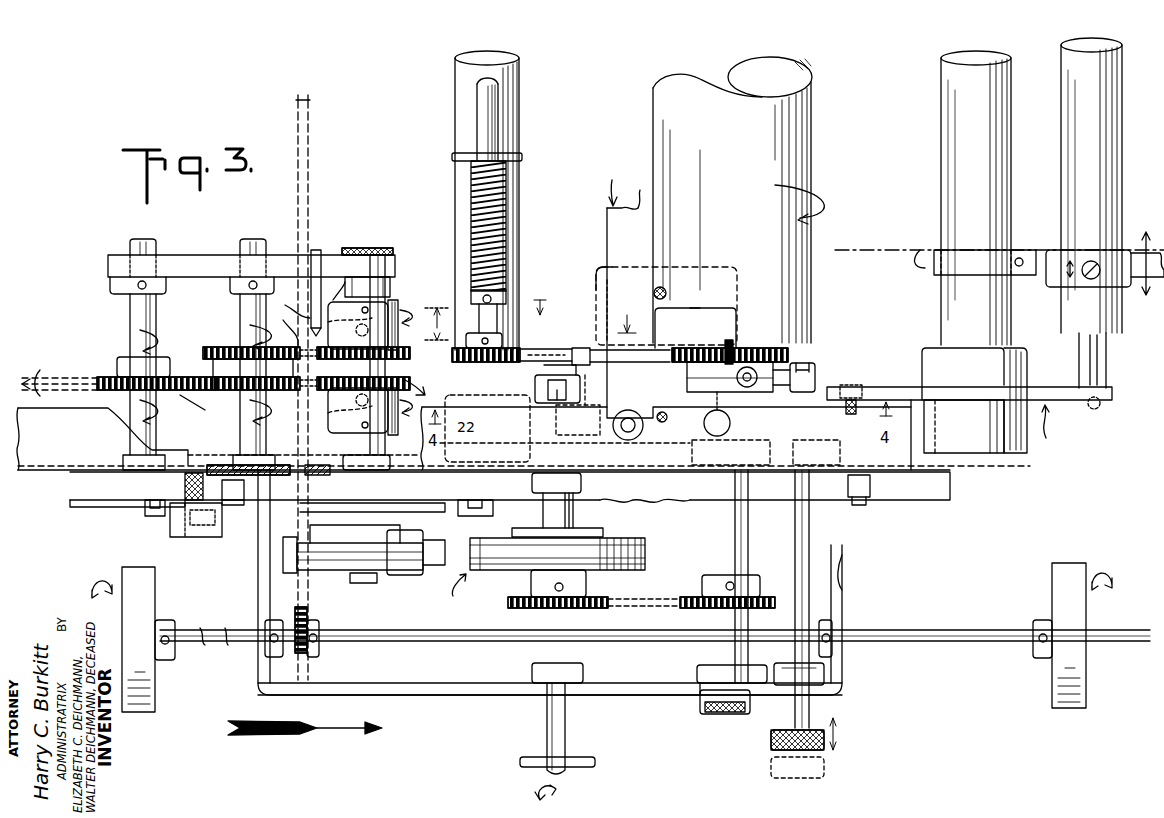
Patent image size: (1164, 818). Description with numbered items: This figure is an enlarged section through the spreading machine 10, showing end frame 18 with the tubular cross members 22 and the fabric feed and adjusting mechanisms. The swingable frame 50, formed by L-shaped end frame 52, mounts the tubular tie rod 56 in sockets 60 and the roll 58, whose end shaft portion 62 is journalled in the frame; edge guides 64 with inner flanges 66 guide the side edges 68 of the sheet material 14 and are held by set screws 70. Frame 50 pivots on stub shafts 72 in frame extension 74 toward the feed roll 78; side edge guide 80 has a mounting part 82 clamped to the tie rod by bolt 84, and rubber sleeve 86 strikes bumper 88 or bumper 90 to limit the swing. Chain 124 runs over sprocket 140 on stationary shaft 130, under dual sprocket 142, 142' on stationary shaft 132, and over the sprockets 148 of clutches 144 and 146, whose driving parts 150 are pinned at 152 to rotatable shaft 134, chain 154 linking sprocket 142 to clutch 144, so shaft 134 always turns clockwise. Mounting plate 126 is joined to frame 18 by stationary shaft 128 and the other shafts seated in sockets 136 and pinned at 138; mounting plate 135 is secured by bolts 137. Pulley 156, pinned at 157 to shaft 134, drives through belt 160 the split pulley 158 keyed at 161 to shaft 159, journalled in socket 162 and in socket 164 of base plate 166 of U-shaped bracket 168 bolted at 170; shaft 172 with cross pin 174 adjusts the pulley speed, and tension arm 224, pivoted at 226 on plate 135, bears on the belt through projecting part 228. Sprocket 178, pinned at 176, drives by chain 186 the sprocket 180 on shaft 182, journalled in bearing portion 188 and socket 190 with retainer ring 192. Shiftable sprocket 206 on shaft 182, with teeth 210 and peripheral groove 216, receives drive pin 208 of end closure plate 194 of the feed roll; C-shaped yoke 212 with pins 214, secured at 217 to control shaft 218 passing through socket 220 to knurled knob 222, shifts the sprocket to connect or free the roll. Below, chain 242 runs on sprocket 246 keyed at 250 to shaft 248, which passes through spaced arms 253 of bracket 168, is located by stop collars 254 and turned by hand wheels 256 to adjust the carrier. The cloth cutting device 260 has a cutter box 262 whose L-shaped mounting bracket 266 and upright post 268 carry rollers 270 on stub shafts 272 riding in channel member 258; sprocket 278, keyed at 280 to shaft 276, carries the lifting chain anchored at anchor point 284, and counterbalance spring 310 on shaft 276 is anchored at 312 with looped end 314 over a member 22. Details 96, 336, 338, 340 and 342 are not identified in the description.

The base 10 is at (60, 498).
The axis line 14 is at (905, 238).
The frame member 18 is at (48, 470).
The post 22 is at (465, 107).
The bracket 50 is at (1054, 429).
The plate 52 is at (1062, 395).
The post 56 is at (952, 165).
The post 58 is at (1112, 152).
The bracket 60 is at (1012, 345).
The pin 62 is at (1096, 410).
The arm 64 is at (1150, 285).
The block 66 is at (1052, 250).
The hook 68 is at (912, 250).
The screw 70 is at (1091, 280).
The bracket 72 is at (858, 385).
The plate edge 74 is at (905, 470).
The cylinder 78 is at (795, 135).
The motion arrow 80 is at (1150, 232).
The bracket 82 is at (952, 280).
The pin 84 is at (1022, 257).
The flange 86 is at (995, 450).
The block 88 is at (950, 465).
The roller 90 is at (705, 423).
The roller 96 is at (636, 414).
The shaft 124 is at (34, 376).
The top bar 126 is at (190, 270).
The rod 128 is at (316, 255).
The shaft 130 is at (136, 305).
The shaft 132 is at (242, 302).
The shaft 134 is at (388, 270).
The block 135 is at (125, 498).
The bearing 136 is at (370, 248).
The bearing 137 is at (150, 512).
The bearing cap 138 is at (240, 265).
The hub 140 is at (108, 372).
The gear 142 is at (240, 352).
The gear 142' is at (197, 409).
The bracket 144 is at (398, 312).
The pin 146 is at (430, 380).
The gear 148 is at (345, 362).
The link 150 is at (338, 300).
The bracket 152 is at (377, 307).
The pawl 154 is at (290, 318).
The housing 156 is at (283, 573).
The cylinder 157 is at (375, 540).
The drum 158 is at (640, 538).
The rack 159 is at (570, 622).
The arrow 160 is at (469, 585).
The shaft 161 is at (545, 528).
The hub 162 is at (583, 486).
The collar 164 is at (583, 670).
The bar 166 is at (668, 690).
The frame 168 is at (510, 710).
The bracket 170 is at (236, 513).
The shaft 172 is at (558, 745).
The crank 174 is at (595, 758).
The hub 176 is at (550, 584).
The gear 178 is at (515, 606).
The rod 180 is at (775, 578).
The rod 182 is at (750, 520).
The gear 186 is at (665, 597).
The edge 188 is at (710, 470).
The collar 190 is at (697, 668).
The knob 192 is at (752, 714).
The section line 194 is at (645, 330).
The gear 206 is at (690, 350).
The hub 208 is at (728, 345).
The shaft 210 is at (790, 352).
The coupling 212 is at (815, 375).
The key 214 is at (760, 348).
The block 216 is at (690, 380).
The roller 217 is at (780, 370).
The rod 218 is at (808, 585).
The collar 220 is at (824, 672).
The knob 222 is at (832, 735).
The bar 224 is at (330, 490).
The block 226 is at (187, 538).
The block 228 is at (420, 575).
The rod 242 is at (309, 142).
The pinion 246 is at (307, 660).
The shaft 248 is at (248, 645).
The collar 250 is at (320, 630).
The frame rod 253 is at (262, 600).
The collar 254 is at (275, 655).
The handwheel 256 is at (165, 672).
The bracket 258 is at (582, 430).
The line 260 is at (598, 245).
The arrow 262 is at (610, 185).
The housing 266 is at (700, 267).
The gear 268 is at (548, 328).
The bracket 270 is at (558, 403).
The shaft 272 is at (556, 348).
The section marks 276 is at (455, 325).
The rod 278 is at (500, 112).
The collar 280 is at (484, 332).
The section mark 284 is at (575, 325).
The spring 310 is at (498, 195).
The spring end 312 is at (500, 290).
The collar 314 is at (452, 158).
The line 336 is at (620, 282).
The corner 338 is at (590, 262).
The line 340 is at (638, 189).
The line 342 is at (605, 215).